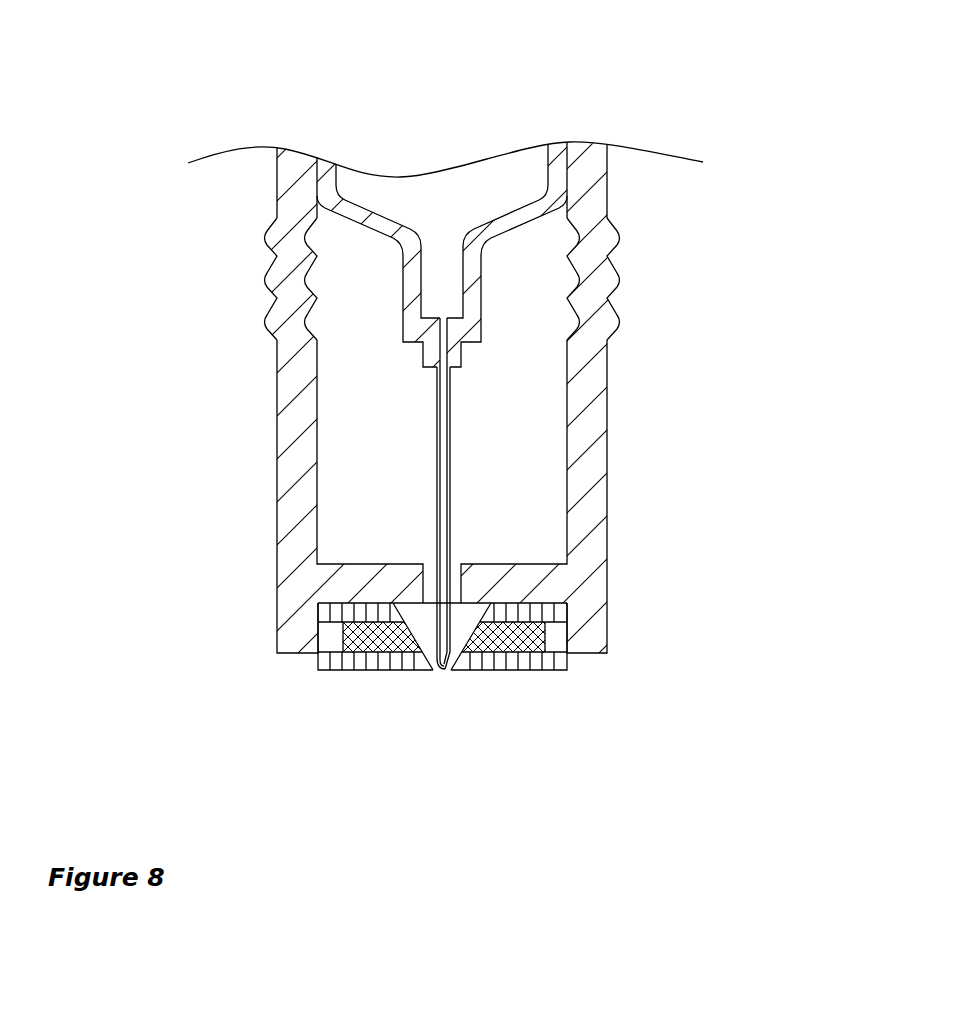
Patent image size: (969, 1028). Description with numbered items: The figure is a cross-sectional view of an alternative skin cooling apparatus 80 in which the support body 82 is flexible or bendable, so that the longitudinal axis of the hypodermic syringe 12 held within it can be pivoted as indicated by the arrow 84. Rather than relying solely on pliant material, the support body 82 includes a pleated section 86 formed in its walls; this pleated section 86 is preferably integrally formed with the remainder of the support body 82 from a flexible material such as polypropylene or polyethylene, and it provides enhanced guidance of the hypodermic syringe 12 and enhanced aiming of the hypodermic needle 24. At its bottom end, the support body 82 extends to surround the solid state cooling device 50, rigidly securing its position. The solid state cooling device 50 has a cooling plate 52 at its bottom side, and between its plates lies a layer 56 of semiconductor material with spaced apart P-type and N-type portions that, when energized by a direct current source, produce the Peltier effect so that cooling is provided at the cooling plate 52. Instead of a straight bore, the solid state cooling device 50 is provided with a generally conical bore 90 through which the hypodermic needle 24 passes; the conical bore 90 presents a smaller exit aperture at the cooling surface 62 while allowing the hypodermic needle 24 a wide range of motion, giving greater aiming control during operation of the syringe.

The hypodermic syringe 12 is at (549, 131).
The hypodermic needle 24 is at (446, 496).
The solid state cooling device 50 is at (318, 662).
The cooling plate 52 is at (380, 672).
The layer of semiconductor material 56 is at (545, 652).
The cooling surface 62 is at (343, 672).
The skin cooling apparatus 80 is at (646, 128).
The support body 82 is at (607, 222).
The arrow 84 is at (478, 108).
The pleated section 86 is at (608, 298).
The conical bore 90 is at (473, 603).